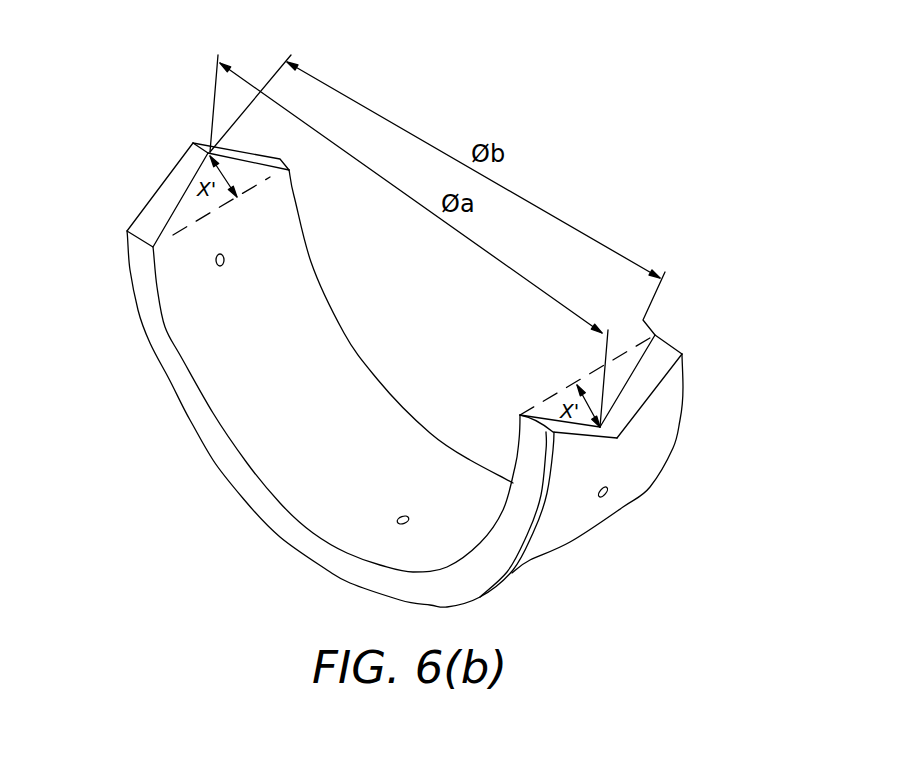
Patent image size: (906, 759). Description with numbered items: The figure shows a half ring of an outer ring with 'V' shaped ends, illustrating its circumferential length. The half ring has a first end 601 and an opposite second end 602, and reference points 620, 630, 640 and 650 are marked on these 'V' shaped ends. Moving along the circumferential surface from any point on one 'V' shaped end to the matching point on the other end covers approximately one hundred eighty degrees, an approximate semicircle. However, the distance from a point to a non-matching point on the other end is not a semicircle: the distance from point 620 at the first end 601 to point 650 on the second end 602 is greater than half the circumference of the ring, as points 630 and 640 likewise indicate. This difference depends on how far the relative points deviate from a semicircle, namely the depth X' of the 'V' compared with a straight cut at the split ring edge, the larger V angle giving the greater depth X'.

The first end 601 is at (125, 240).
The second end 602 is at (683, 366).
The point 620 is at (195, 143).
The point 630 is at (617, 438).
The point 640 is at (281, 159).
The point 650 is at (665, 340).